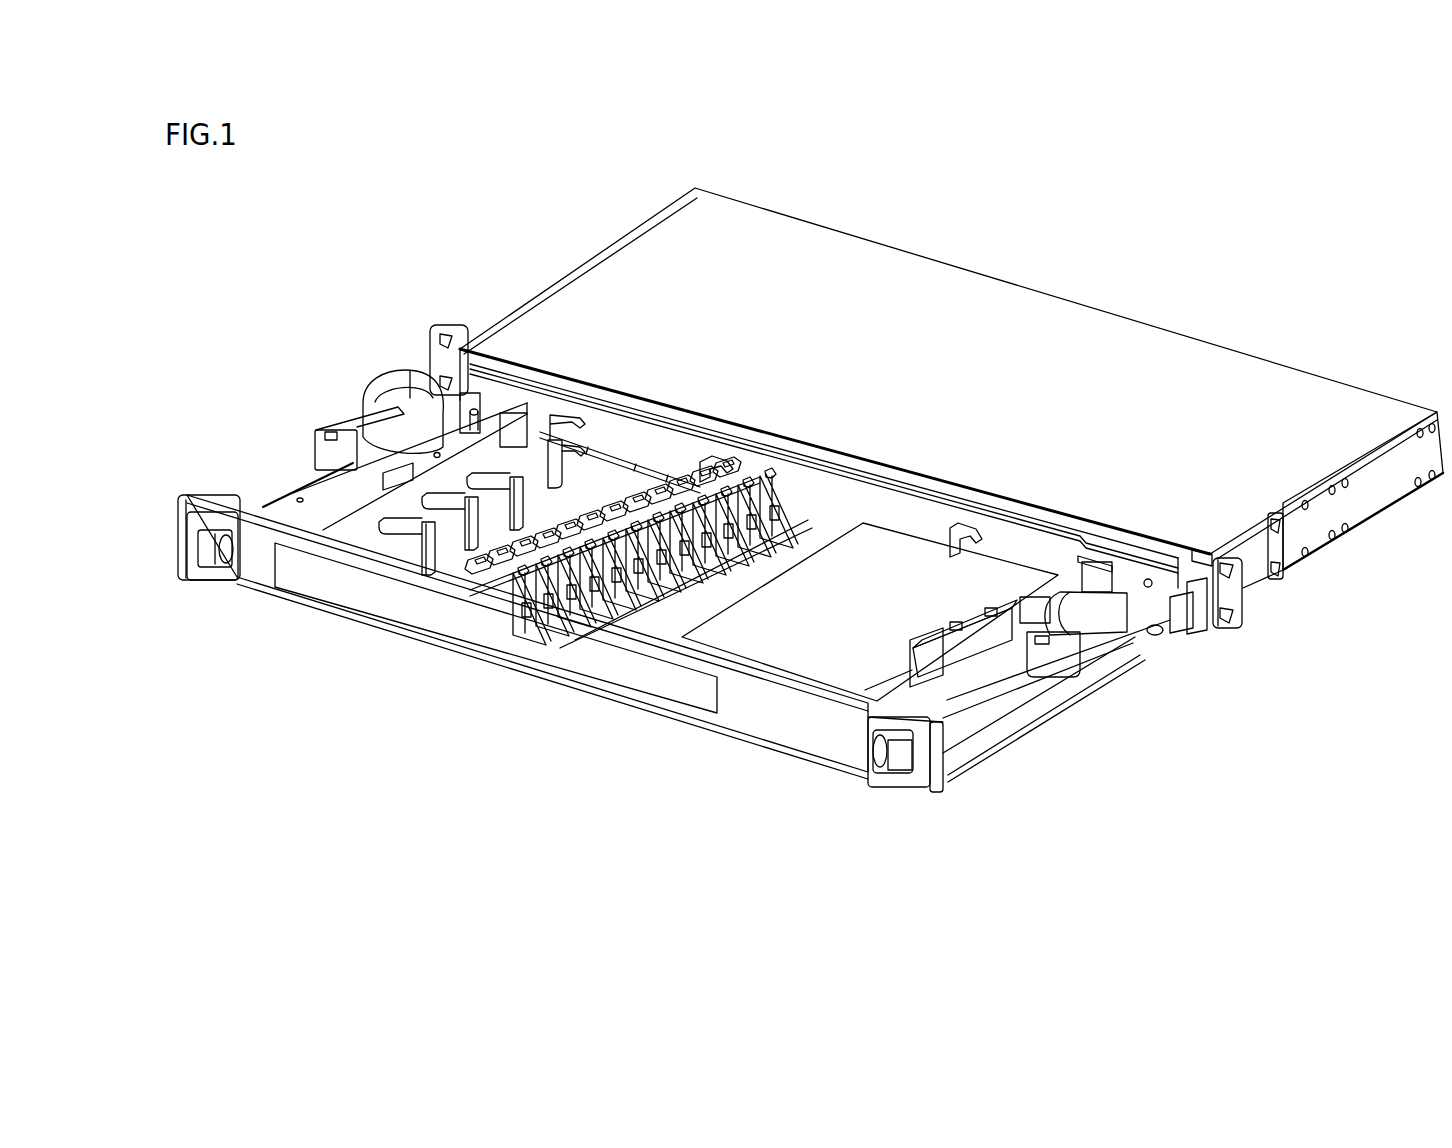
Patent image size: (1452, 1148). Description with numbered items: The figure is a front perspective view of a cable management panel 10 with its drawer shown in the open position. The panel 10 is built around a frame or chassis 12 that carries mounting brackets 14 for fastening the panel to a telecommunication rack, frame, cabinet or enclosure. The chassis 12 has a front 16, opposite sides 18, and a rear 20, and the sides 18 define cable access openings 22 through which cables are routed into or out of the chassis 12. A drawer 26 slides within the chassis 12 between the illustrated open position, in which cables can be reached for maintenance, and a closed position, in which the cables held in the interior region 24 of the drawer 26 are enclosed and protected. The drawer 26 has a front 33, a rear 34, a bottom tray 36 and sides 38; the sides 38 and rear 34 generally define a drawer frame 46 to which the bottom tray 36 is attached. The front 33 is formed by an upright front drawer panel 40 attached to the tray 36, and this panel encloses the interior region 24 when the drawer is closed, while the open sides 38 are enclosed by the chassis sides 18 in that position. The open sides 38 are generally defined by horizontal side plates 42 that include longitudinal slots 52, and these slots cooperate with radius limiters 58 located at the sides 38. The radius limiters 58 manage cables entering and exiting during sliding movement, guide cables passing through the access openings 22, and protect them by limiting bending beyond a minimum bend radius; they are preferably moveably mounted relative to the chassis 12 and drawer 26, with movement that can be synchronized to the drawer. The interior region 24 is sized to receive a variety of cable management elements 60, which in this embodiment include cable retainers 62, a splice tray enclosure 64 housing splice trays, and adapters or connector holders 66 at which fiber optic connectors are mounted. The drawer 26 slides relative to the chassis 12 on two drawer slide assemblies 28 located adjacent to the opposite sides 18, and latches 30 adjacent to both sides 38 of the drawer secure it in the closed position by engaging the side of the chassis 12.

The cable management panel 10 is at (402, 247).
The chassis 12 is at (936, 408).
The mounting brackets 14 is at (500, 300).
The front 16 is at (1206, 661).
The sides 18 is at (606, 237).
The rear 20 is at (1122, 280).
The cable access openings 22 is at (1210, 554).
The interior region 24 is at (678, 452).
The drawer 26 is at (560, 660).
The drawer slide assemblies 28 is at (1164, 663).
The latches 30 is at (212, 566).
The front 33 is at (800, 730).
The rear 34 is at (873, 498).
The bottom tray 36 is at (592, 480).
The sides 38 is at (312, 495).
The upright front drawer panel 40 is at (415, 620).
The horizontal side plates 42 is at (275, 515).
The drawer frame 46 is at (1027, 741).
The longitudinal slots 52 is at (325, 486).
The radius limiters 58 is at (382, 392).
The cable management elements 60 is at (578, 398).
The cable retainers 62 is at (426, 545).
The splice tray enclosure 64 is at (752, 647).
The adapters or connector holders 66 is at (565, 548).